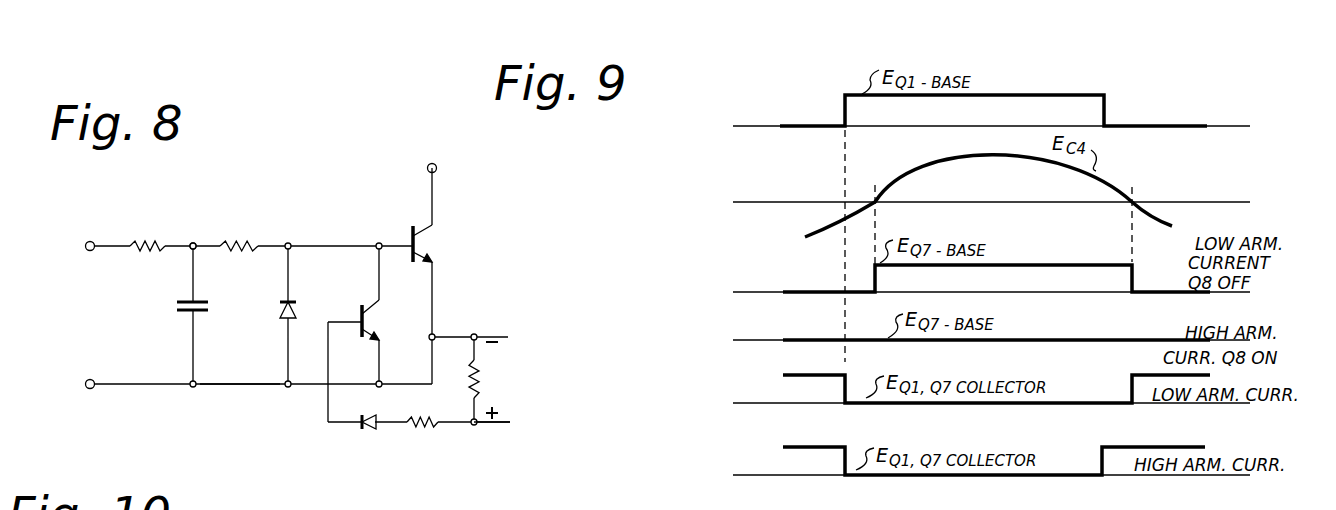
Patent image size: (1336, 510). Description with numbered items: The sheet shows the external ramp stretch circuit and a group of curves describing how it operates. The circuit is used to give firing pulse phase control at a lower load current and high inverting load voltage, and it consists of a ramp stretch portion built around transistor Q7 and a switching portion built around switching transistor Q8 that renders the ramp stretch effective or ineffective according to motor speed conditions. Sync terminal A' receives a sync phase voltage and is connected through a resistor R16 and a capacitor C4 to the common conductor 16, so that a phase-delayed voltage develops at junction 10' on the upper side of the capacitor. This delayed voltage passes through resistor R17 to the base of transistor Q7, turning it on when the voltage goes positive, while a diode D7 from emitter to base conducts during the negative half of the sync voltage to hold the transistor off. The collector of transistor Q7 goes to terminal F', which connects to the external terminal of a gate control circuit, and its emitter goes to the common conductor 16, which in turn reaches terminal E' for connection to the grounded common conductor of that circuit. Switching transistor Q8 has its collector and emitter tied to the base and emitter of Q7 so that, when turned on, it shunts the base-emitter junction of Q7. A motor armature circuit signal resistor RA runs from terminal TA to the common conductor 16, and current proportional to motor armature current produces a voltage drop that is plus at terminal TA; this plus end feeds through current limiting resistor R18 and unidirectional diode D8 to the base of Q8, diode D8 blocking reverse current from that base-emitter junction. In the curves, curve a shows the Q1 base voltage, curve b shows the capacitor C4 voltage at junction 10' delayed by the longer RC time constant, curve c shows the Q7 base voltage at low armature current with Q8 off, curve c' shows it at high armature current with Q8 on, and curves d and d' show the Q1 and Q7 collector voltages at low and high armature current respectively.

In FIG. 8, the sync terminal A' is at (75, 232).
In FIG. 8, the terminal E' is at (73, 371).
In FIG. 8, the terminal F' is at (413, 160).
In FIG. 8, the resistor R16 is at (168, 222).
In FIG. 8, the junction 10' is at (202, 229).
In FIG. 8, the resistor R17 is at (253, 242).
In FIG. 8, the capacitor C4 is at (174, 306).
In FIG. 8, the diode D7 is at (279, 311).
In FIG. 8, the common conductor 16 is at (258, 383).
In FIG. 8, the transistor Q7 is at (424, 244).
In FIG. 8, the switching transistor Q8 is at (372, 318).
In FIG. 8, the motor armature circuit signal resistor RA is at (481, 380).
In FIG. 8, the unidirectional diode D8 is at (368, 430).
In FIG. 8, the current limiting resistor R18 is at (424, 430).
In FIG. 8, the terminal TA is at (476, 426).
In FIG. 9, the curve a is at (950, 118).
In FIG. 9, the curve b is at (953, 196).
In FIG. 9, the curve c is at (954, 284).
In FIG. 9, the curve c' is at (952, 332).
In FIG. 9, the curve d is at (952, 394).
In FIG. 9, the curve d' is at (952, 466).